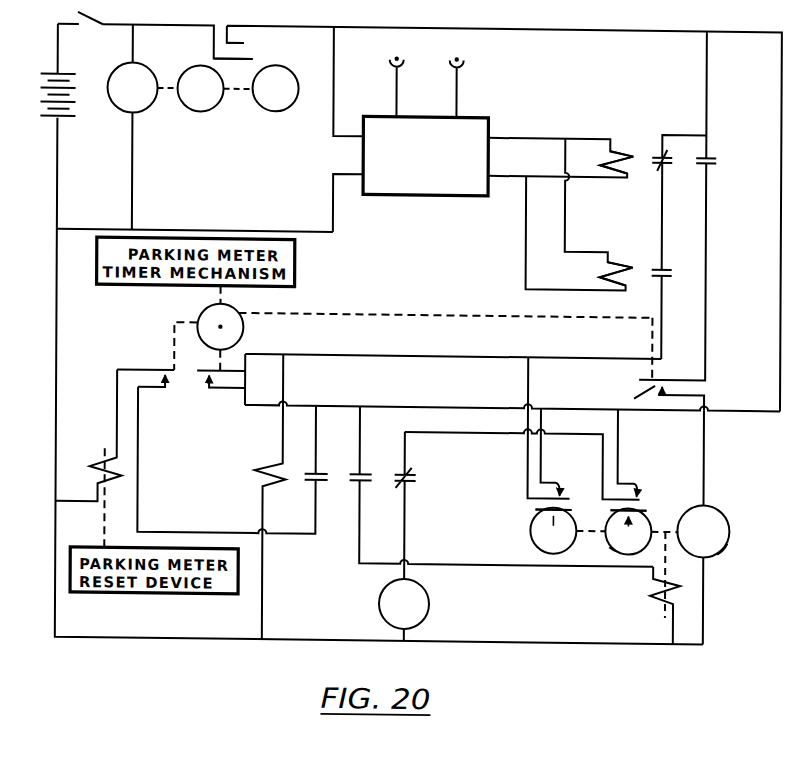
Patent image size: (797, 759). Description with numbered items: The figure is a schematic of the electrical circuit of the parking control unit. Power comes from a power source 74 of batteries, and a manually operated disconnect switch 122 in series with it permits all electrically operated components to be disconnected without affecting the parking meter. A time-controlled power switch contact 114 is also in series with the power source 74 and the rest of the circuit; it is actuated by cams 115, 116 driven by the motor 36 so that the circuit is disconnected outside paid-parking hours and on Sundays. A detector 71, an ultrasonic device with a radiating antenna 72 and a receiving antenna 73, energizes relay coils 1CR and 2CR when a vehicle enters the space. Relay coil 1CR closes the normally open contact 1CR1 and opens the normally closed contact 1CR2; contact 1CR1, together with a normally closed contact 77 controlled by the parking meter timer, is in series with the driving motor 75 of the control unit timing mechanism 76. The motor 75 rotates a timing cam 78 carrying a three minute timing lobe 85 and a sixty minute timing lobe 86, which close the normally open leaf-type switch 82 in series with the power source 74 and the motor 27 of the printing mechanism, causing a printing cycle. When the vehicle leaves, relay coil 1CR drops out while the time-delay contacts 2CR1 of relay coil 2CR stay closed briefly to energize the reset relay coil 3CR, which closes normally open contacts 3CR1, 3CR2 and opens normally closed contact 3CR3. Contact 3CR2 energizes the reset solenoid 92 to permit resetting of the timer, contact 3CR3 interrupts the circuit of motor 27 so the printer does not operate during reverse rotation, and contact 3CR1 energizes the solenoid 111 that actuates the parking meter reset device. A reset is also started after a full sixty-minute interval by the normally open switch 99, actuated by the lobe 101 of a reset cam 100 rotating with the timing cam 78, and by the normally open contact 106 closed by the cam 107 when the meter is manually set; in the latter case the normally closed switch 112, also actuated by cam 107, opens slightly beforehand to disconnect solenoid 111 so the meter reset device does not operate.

The power source 74 is at (51, 72).
The manually operated disconnect switch 122 is at (88, 19).
The time-controlled power switch contact 114 is at (246, 54).
The motor 36 is at (136, 110).
The cam 115 is at (201, 110).
The cam 116 is at (273, 109).
The detector 71 is at (489, 112).
The radiating antenna 72 is at (399, 82).
The receiving antenna 73 is at (459, 82).
The relay coil 1CR is at (630, 142).
The normally closed contact 1CR2 is at (652, 142).
The normally open contact 1CR1 is at (722, 142).
The relay coil 2CR is at (628, 262).
The contacts 2CR1 is at (658, 267).
The cam 107 is at (245, 324).
The leaf spring type contact switch 112 is at (166, 366).
The normally open contact 106 is at (205, 386).
The normally closed contact 77 is at (658, 363).
The solenoid 111 is at (99, 460).
The reset relay coil 3CR is at (270, 460).
The normally open contact 3CR1 is at (327, 485).
The normally open contact 3CR2 is at (374, 465).
The normally closed contact 3CR3 is at (417, 467).
The motor 27 is at (431, 616).
The normally open contact switch 99 is at (561, 476).
The normally open leaf-type contact switch 82 is at (639, 478).
The reset cam 100 is at (535, 538).
The lobe 101 is at (538, 503).
The three minute timing lobe 85 is at (648, 503).
The sixty minute timing lobe 86 is at (613, 503).
The timing cam 78 is at (617, 543).
The driving motor 75 is at (727, 505).
The control unit timing mechanism 76 is at (721, 547).
The reset solenoid 92 is at (655, 598).